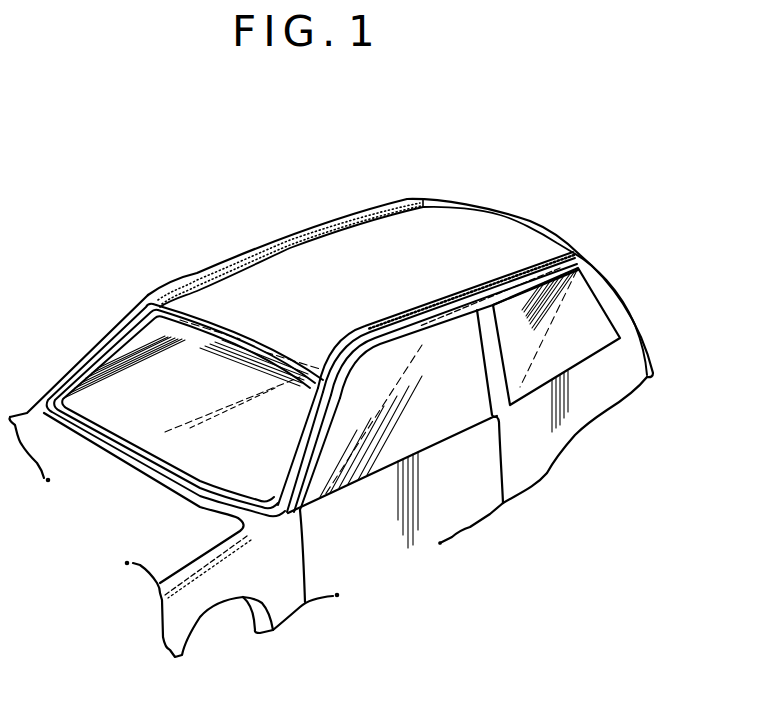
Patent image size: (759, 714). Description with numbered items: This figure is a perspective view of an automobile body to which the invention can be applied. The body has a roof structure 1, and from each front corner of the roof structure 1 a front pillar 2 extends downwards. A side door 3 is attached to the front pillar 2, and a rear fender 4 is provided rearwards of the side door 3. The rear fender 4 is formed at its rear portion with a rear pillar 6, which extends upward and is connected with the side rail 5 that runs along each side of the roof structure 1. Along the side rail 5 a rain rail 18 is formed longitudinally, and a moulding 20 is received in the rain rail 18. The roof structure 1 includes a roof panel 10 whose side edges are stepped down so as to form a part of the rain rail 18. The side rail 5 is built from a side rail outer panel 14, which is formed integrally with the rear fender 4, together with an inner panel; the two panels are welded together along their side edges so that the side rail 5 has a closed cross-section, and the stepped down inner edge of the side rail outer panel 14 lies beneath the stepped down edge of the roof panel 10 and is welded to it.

The roof structure 1 is at (337, 256).
The front pillar 2 is at (292, 476).
The side door 3 is at (465, 493).
The rear fender 4 is at (572, 420).
The side rail 5 is at (424, 325).
The rear pillar 6 is at (600, 280).
The roof panel 10 is at (452, 230).
The side rail outer panel 14 is at (520, 287).
The rain rail 18 is at (340, 353).
The moulding 20 is at (428, 310).